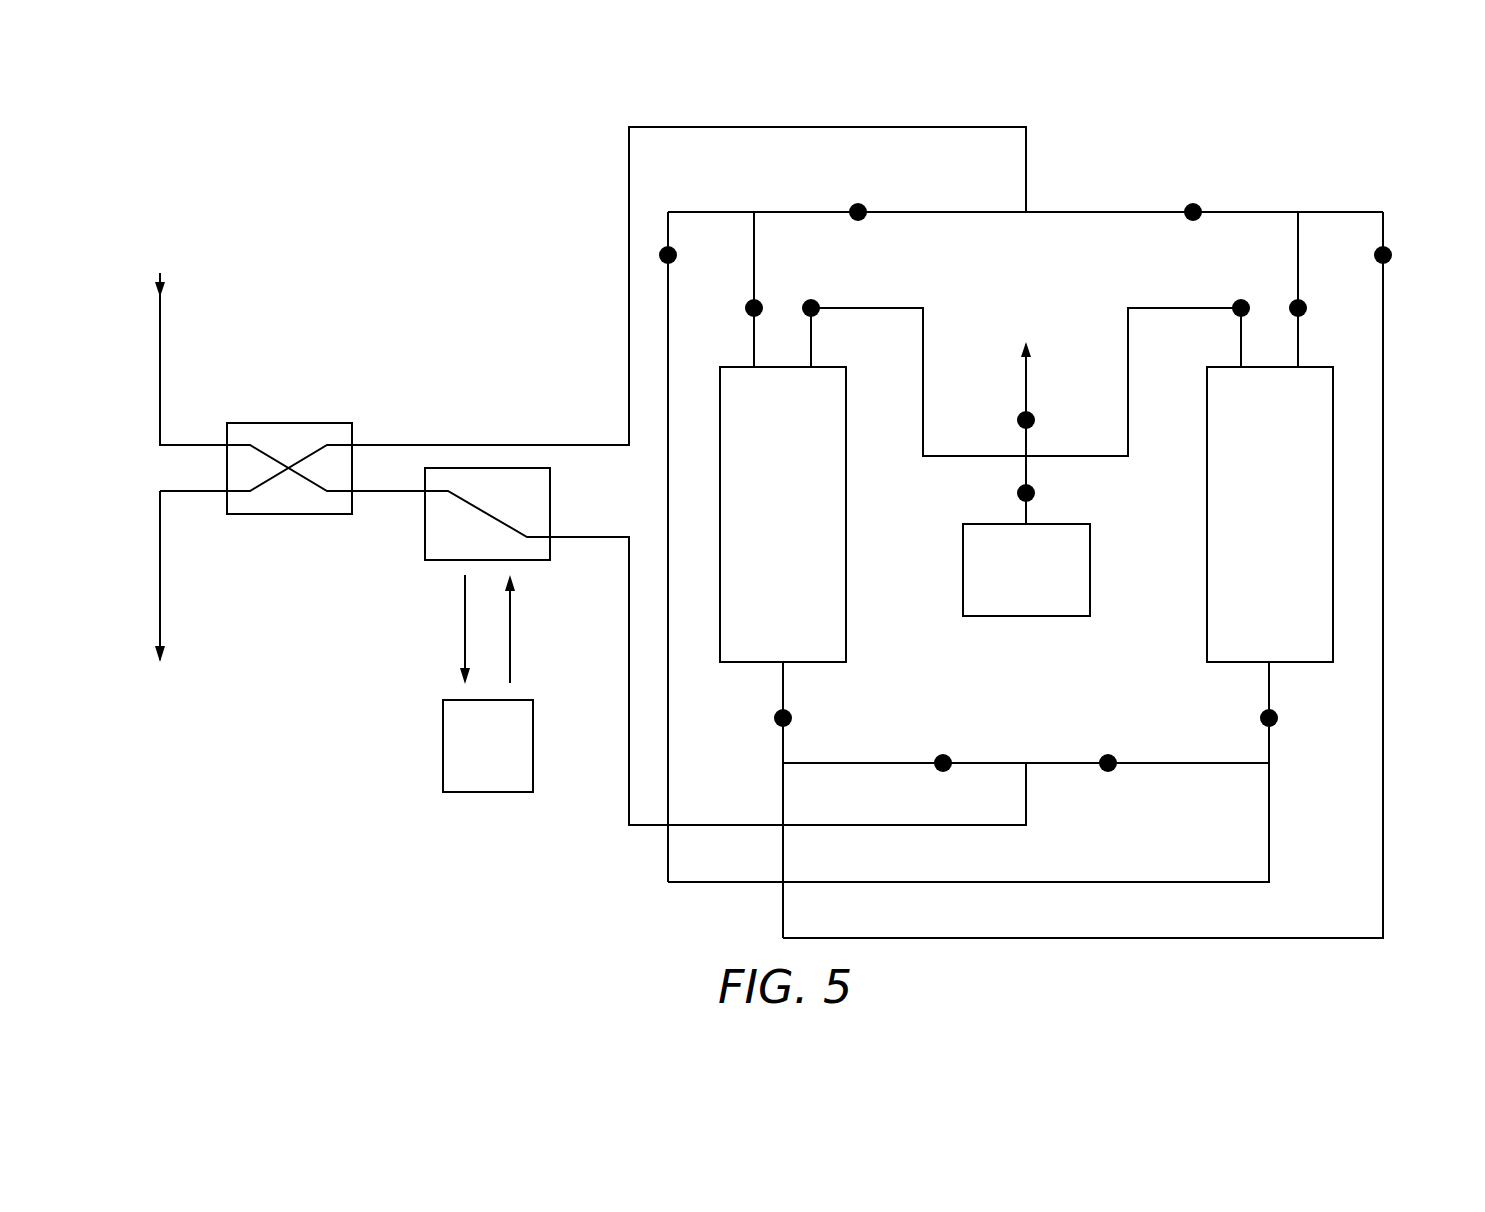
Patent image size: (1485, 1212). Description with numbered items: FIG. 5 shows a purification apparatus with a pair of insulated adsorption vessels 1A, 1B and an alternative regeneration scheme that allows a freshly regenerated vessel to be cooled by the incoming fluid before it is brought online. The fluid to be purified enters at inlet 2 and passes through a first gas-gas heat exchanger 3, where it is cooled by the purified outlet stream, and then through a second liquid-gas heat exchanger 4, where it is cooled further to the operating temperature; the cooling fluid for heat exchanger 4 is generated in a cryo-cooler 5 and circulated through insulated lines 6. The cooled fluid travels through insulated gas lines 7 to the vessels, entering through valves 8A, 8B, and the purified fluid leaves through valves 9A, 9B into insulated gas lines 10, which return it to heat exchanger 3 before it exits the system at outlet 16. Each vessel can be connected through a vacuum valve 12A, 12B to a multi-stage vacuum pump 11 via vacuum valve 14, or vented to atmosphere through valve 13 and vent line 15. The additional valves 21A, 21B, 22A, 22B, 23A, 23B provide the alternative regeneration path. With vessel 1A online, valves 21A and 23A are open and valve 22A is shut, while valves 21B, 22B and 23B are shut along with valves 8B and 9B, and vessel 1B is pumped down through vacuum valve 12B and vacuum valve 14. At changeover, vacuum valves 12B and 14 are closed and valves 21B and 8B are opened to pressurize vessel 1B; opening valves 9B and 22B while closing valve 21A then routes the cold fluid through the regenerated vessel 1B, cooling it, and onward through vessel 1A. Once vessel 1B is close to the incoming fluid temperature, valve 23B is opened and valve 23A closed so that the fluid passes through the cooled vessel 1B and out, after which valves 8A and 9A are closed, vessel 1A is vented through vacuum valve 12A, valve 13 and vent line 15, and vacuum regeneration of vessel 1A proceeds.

The insulated adsorption vessel 1A is at (783, 514).
The insulated adsorption vessel 1B is at (1270, 514).
The inlet 2 is at (158, 308).
The first gas-gas heat exchanger 3 is at (330, 423).
The second liquid-gas heat exchanger 4 is at (425, 542).
The cryo-cooler 5 is at (488, 746).
The insulated lines 6 is at (465, 629).
The insulated gas lines 7 is at (629, 811).
The valve 8A is at (774, 718).
The valve 8B is at (1278, 718).
The valve 9A is at (745, 308).
The valve 9B is at (1307, 308).
The insulated gas lines 10 is at (629, 138).
The multi-stage vacuum pump 11 is at (1026, 570).
The vacuum valve 12A is at (811, 299).
The vacuum valve 12B is at (1241, 299).
The valve 13 is at (1035, 420).
The vacuum valve 14 is at (1035, 493).
The vent line 15 is at (1027, 365).
The outlet 16 is at (160, 625).
The valve 21A is at (943, 754).
The valve 21B is at (1108, 754).
The valve 22A is at (659, 255).
The valve 22B is at (1392, 255).
The valve 23A is at (858, 203).
The valve 23B is at (1193, 203).